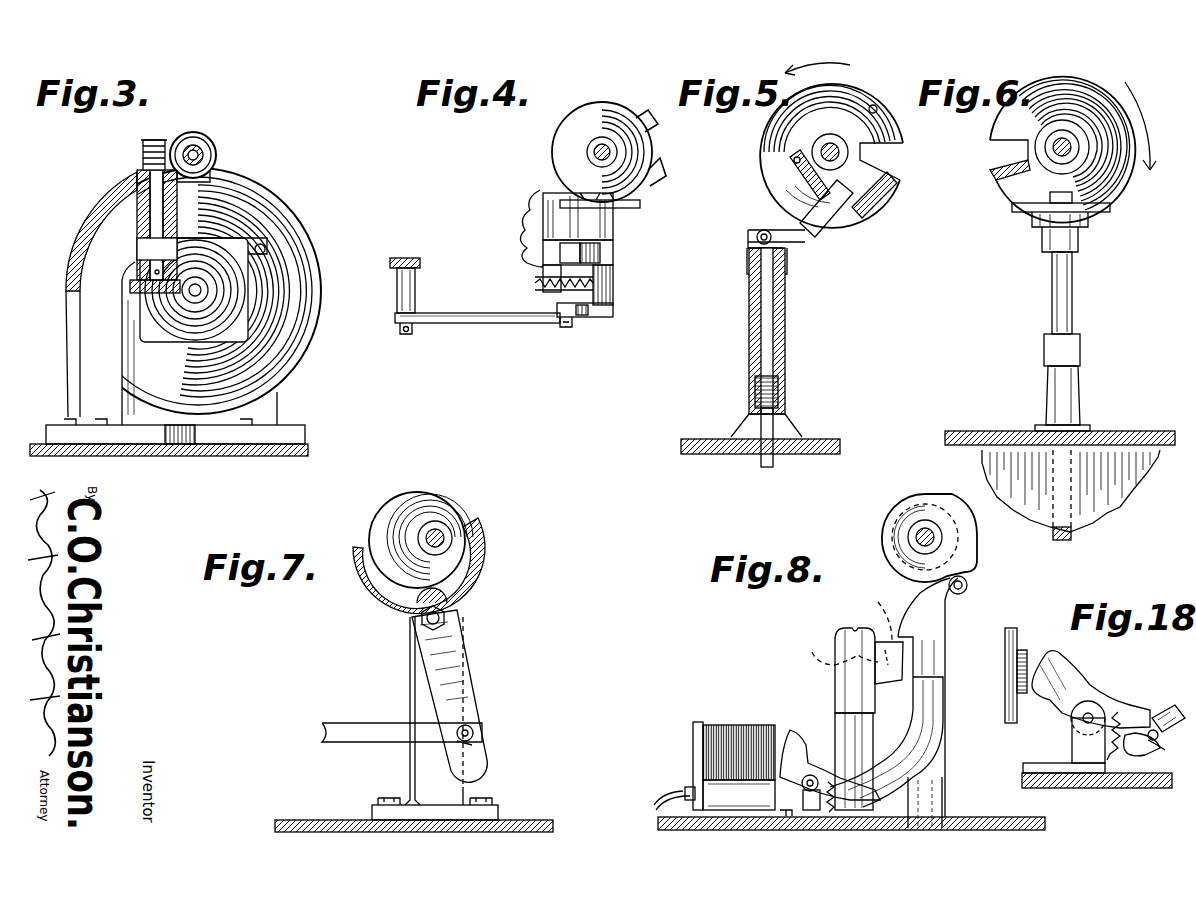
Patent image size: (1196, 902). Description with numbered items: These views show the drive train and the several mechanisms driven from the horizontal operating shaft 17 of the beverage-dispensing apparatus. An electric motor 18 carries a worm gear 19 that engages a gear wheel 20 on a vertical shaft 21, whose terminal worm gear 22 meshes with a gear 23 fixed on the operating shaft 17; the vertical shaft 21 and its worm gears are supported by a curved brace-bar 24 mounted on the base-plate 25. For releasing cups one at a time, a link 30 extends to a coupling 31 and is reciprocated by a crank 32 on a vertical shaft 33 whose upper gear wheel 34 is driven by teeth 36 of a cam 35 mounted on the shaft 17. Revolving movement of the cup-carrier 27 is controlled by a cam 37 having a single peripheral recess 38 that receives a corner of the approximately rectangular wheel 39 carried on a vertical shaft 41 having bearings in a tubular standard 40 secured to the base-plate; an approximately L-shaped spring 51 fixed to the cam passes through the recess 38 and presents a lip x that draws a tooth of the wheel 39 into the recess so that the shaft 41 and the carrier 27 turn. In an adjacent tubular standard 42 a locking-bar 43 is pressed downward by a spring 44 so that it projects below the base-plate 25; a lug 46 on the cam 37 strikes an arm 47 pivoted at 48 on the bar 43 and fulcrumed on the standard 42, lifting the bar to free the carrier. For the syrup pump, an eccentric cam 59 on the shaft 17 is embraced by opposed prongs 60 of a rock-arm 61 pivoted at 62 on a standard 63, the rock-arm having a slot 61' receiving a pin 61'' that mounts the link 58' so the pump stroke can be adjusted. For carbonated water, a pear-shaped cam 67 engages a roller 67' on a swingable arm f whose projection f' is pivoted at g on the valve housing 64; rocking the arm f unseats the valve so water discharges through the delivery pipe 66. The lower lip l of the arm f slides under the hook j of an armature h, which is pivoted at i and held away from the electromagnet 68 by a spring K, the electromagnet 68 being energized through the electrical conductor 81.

In FIG. 3, the horizontal operating shaft 17 is at (210, 153).
In FIG. 4, the horizontal operating shaft 17 is at (590, 152).
In FIG. 5, the horizontal operating shaft 17 is at (820, 143).
In FIG. 6, the horizontal operating shaft 17 is at (1057, 138).
In FIG. 7, the horizontal operating shaft 17 is at (443, 532).
In FIG. 8, the horizontal operating shaft 17 is at (910, 544).
In FIG. 3, the electric motor 18 is at (297, 342).
In FIG. 3, the worm gear 19 is at (203, 298).
In FIG. 3, the gear wheel 20 is at (133, 285).
In FIG. 4, the gear wheel 20 is at (535, 285).
In FIG. 3, the vertical shaft 21 is at (163, 217).
In FIG. 3, the terminal worm gear 22 is at (143, 152).
In FIG. 3, the gear 23 is at (215, 133).
In FIG. 3, the curved brace-bar 24 is at (85, 363).
In FIG. 4, the curved brace-bar 24 is at (526, 232).
In FIG. 3, the base-plate 25 is at (135, 456).
In FIG. 5, the base-plate 25 is at (695, 454).
In FIG. 6, the base-plate 25 is at (965, 431).
In FIG. 7, the base-plate 25 is at (526, 822).
In FIG. 8, the base-plate 25 is at (658, 822).
In FIG. 18, the base-plate 25 is at (1086, 788).
In FIG. 6, the cup-carrier 27 is at (1117, 508).
In FIG. 4, the link 30 is at (455, 323).
In FIG. 4, the coupling 31 is at (416, 300).
In FIG. 4, the crank 32 is at (578, 314).
In FIG. 4, the vertical shaft 33 is at (608, 284).
In FIG. 4, the gear wheel 34 is at (638, 210).
In FIG. 4, the cam 35 is at (568, 132).
In FIG. 4, the teeth 36 is at (660, 158).
In FIG. 5, the cam 37 is at (847, 92).
In FIG. 6, the cam 37 is at (1075, 90).
In FIG. 5, the recess 38 is at (878, 153).
In FIG. 6, the recess 38 is at (1000, 157).
In FIG. 6, the wheel 39 is at (1093, 207).
In FIG. 6, the tubular standard 40 is at (1082, 390).
In FIG. 6, the vertical shaft 41 is at (1072, 300).
In FIG. 5, the tubular standard 42 is at (785, 352).
In FIG. 5, the locking-bar 43 is at (773, 460).
In FIG. 5, the spring 44 is at (755, 397).
In FIG. 5, the lug 46 is at (869, 108).
In FIG. 5, the arm 47 is at (817, 233).
In FIG. 5, the pivot 48 is at (760, 232).
In FIG. 5, the spring 51 is at (873, 196).
In FIG. 7, the link 58' is at (399, 752).
In FIG. 7, the eccentric cam 59 is at (397, 505).
In FIG. 7, the prongs 60 is at (480, 582).
In FIG. 7, the rock-arm 61 is at (466, 696).
In FIG. 7, the slot 61' is at (492, 729).
In FIG. 7, the pin 61'' is at (495, 753).
In FIG. 7, the pivot 62 is at (447, 622).
In FIG. 7, the standard 63 is at (418, 705).
In FIG. 8, the valve housing 64 is at (835, 685).
In FIG. 8, the beverage delivery pipe 66 is at (942, 800).
In FIG. 8, the cam 67 is at (911, 538).
In FIG. 8, the roller 67' is at (932, 696).
In FIG. 8, the electromagnet 68 is at (735, 724).
In FIG. 18, the electromagnet 68 is at (1012, 628).
In FIG. 8, the electrical conductor 81 is at (666, 797).
In FIG. 8, the swingable arm f is at (893, 742).
In FIG. 18, the swingable arm f is at (1168, 704).
In FIG. 8, the projection f' is at (887, 636).
In FIG. 8, the pivot g is at (815, 652).
In FIG. 8, the armature h is at (797, 741).
In FIG. 18, the armature h is at (1065, 665).
In FIG. 18, the pivot i is at (1082, 719).
In FIG. 18, the hook j is at (1153, 729).
In FIG. 18, the spring K is at (1150, 752).
In FIG. 18, the lip l is at (1165, 745).
In FIG. 6, the lip x is at (1015, 172).